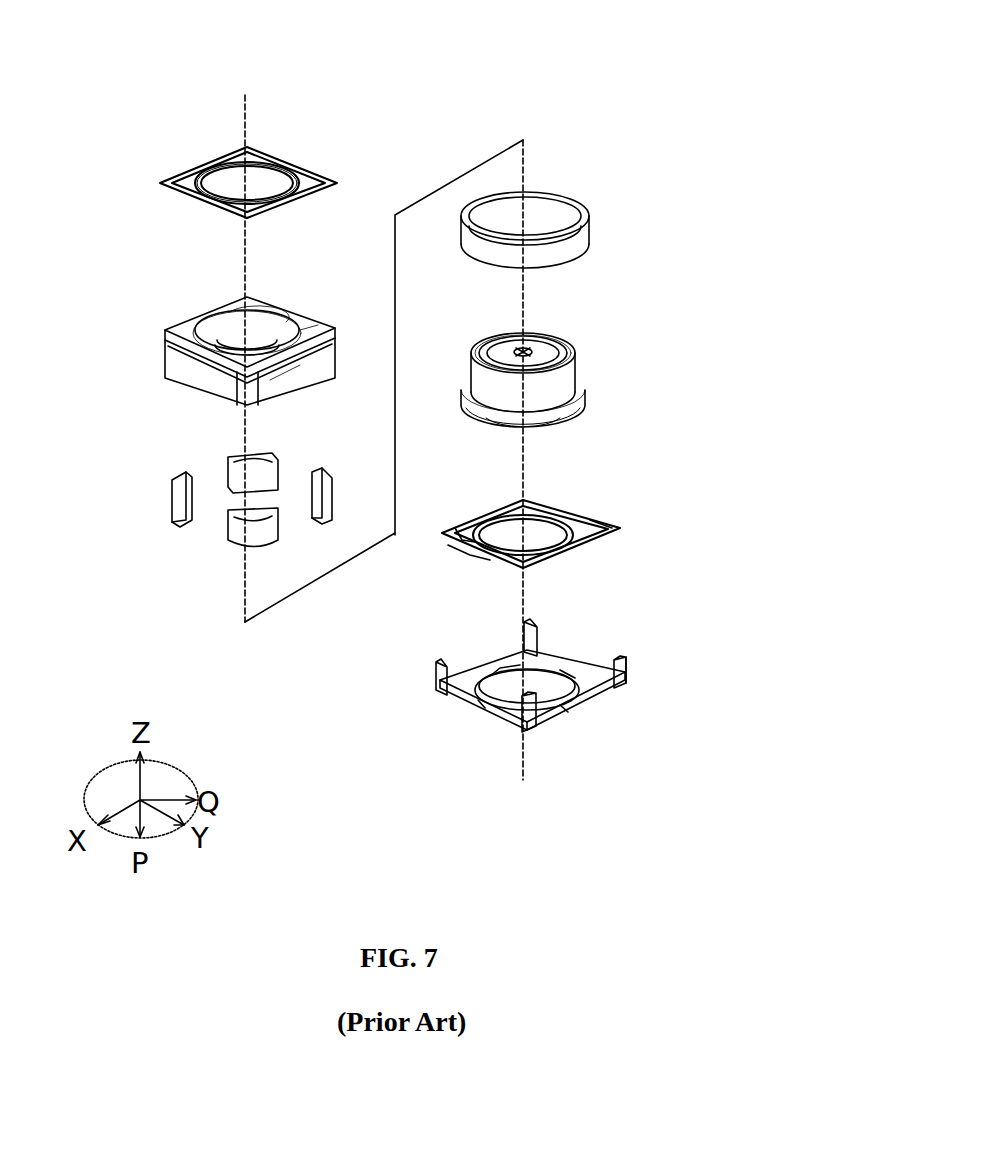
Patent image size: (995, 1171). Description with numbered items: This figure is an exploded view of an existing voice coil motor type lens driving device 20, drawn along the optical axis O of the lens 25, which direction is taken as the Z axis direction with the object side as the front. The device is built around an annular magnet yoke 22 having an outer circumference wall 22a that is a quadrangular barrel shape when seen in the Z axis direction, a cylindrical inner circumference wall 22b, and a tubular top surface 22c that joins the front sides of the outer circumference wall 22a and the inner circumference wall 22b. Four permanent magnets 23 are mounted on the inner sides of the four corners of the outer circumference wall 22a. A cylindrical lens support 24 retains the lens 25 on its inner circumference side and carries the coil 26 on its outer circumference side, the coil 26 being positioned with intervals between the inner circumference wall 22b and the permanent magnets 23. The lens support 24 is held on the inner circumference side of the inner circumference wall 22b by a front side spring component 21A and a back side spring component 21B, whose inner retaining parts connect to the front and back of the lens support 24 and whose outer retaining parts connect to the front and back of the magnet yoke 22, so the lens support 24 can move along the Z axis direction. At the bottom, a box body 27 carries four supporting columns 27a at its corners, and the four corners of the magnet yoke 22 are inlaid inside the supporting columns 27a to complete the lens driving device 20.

The lens driving device 20 is at (572, 88).
The optical axis O is at (249, 123).
The front side spring component 21A is at (208, 162).
The back side spring component 21B is at (706, 561).
The magnet yoke 22 is at (182, 326).
The outer circumference wall 22a is at (300, 375).
The inner circumference wall 22b is at (262, 318).
The tubular top surface 22c is at (322, 328).
The permanent magnets 23 is at (186, 490).
The lens support 24 is at (575, 347).
The lens 25 is at (504, 346).
The coil 26 is at (560, 213).
The box body 27 is at (598, 688).
The supporting columns 27a is at (634, 666).